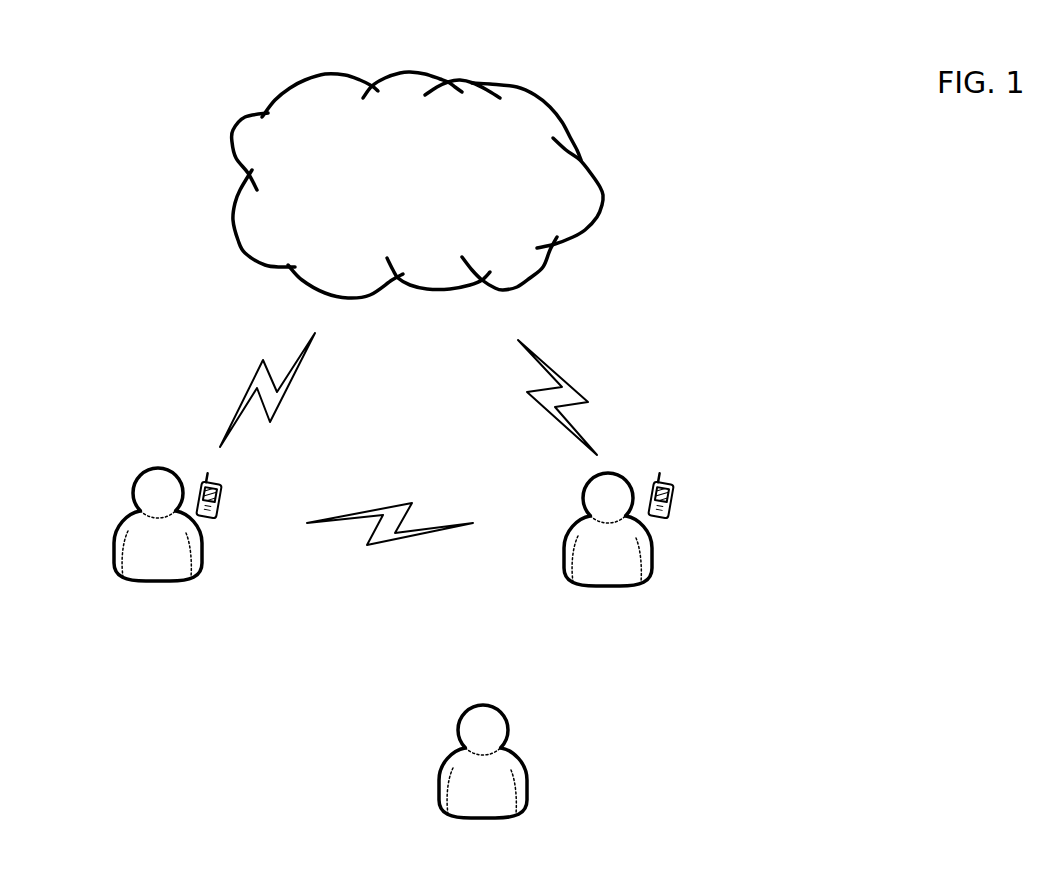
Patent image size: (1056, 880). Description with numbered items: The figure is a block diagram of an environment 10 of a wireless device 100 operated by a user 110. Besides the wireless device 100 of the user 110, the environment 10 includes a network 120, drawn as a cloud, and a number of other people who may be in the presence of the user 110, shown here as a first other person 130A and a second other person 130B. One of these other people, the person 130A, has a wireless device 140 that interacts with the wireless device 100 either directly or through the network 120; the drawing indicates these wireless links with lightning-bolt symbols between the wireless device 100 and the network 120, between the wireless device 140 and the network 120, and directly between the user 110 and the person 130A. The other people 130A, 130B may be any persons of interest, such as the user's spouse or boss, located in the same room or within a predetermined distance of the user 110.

The environment 10 is at (652, 90).
The wireless device 100 is at (222, 502).
The user 110 is at (202, 567).
The network 120 is at (603, 195).
The other person 130A is at (652, 568).
The other person 130B is at (527, 778).
The wireless device 140 is at (675, 503).